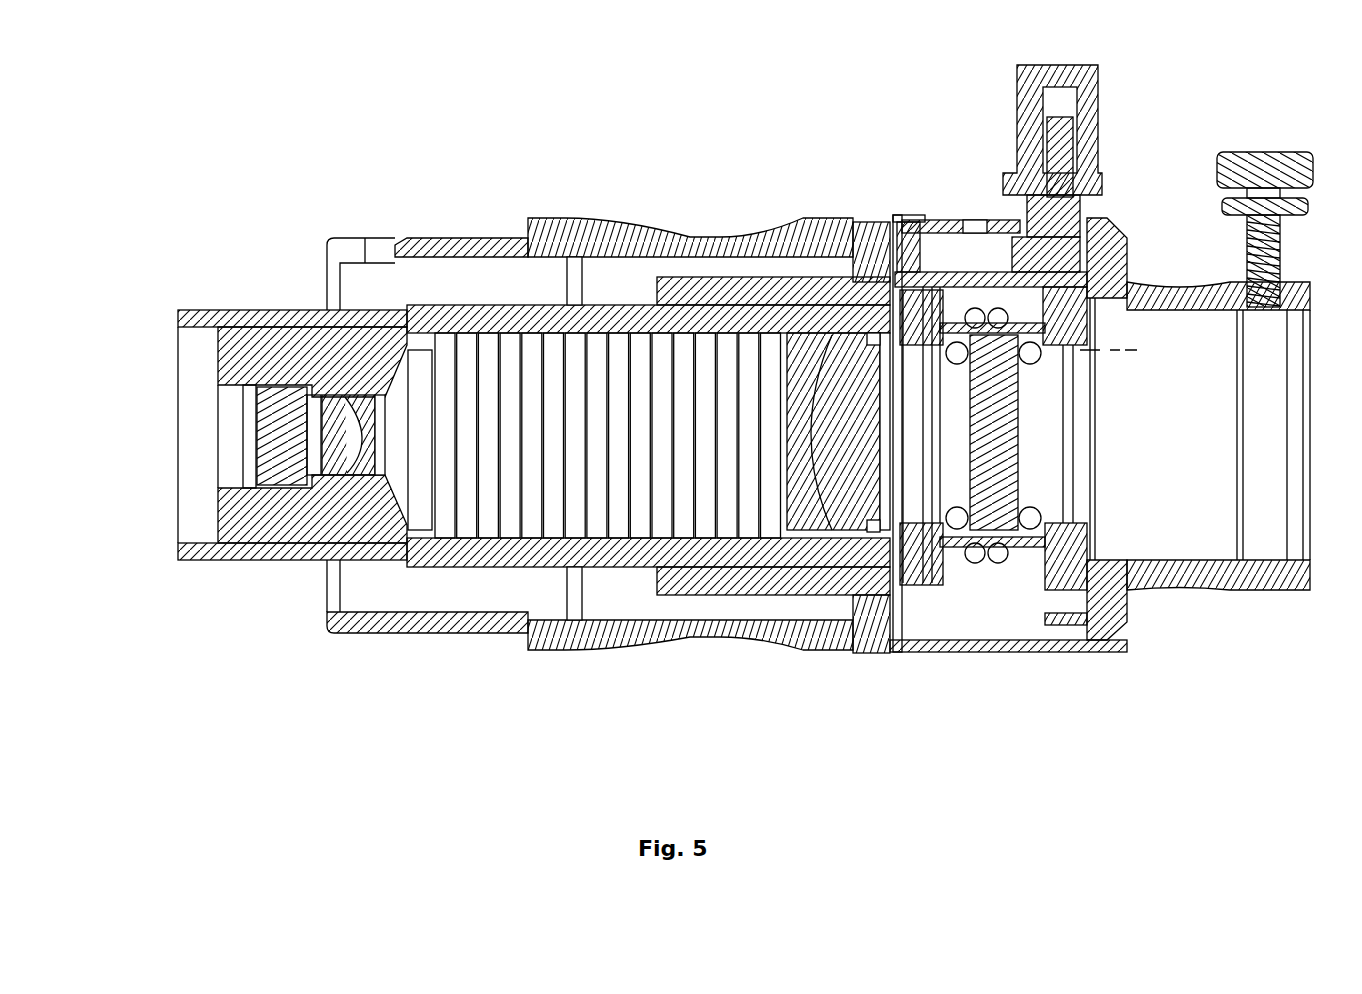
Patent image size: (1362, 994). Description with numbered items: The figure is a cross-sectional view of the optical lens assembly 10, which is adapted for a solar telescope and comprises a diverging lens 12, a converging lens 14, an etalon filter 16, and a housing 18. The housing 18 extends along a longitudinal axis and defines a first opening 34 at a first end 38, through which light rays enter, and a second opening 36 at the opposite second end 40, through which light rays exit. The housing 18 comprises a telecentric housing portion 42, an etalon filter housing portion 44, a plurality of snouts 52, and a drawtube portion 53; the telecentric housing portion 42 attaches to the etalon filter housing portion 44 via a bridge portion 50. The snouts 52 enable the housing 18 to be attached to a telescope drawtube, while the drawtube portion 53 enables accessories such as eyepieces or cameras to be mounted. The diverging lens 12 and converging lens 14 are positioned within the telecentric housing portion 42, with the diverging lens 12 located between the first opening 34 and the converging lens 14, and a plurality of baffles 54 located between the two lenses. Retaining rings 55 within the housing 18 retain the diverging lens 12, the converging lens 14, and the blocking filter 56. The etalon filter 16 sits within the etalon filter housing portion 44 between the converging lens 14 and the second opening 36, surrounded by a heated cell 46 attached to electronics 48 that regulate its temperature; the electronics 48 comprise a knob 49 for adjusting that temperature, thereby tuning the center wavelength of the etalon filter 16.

The optical lens assembly 10 is at (432, 112).
The diverging lens 12 is at (330, 470).
The converging lens 14 is at (830, 360).
The etalon filter 16 is at (995, 523).
The housing 18 is at (405, 247).
The first opening 34 is at (175, 400).
The second opening 36 is at (1310, 425).
The first end 38 is at (190, 312).
The second end 40 is at (1205, 592).
The telecentric housing portion 42 is at (400, 320).
The etalon filter housing portion 44 is at (950, 655).
The heated cell 46 is at (1018, 307).
The electronics 48 is at (1045, 275).
The knob 49 is at (1018, 68).
The bridge portion 50 is at (567, 218).
The snouts 52 is at (235, 560).
The drawtube portion 53 is at (1145, 577).
The baffles 54 is at (690, 345).
The retaining rings 55 is at (243, 455).
The blocking filter 56 is at (270, 387).